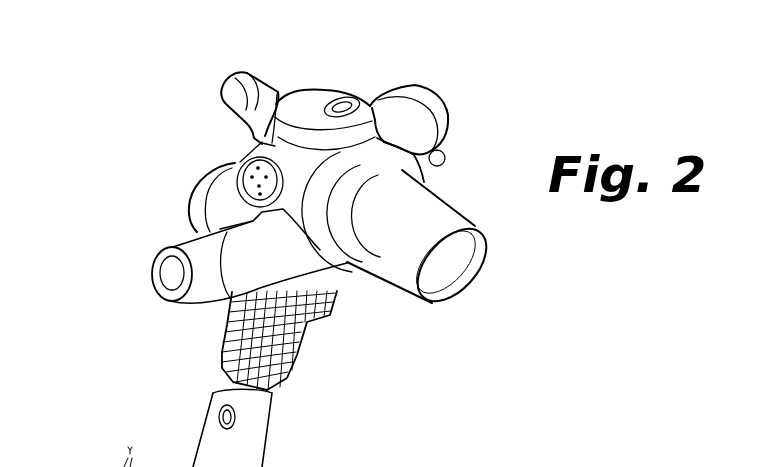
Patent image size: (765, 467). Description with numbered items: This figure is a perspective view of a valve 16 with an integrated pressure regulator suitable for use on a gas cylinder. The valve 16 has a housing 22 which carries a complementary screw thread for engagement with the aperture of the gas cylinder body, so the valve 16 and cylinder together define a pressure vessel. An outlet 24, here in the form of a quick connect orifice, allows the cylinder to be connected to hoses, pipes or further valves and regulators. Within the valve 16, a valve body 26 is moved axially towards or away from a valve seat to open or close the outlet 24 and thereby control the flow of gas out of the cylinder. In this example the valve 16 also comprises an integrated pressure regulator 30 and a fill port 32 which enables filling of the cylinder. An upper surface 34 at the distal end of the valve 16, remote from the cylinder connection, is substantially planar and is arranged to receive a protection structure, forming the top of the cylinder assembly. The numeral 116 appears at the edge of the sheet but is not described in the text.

The valve 16 is at (150, 81).
The housing 22 is at (216, 360).
The outlet 24 is at (446, 153).
The valve body 26 is at (215, 210).
The integrated pressure regulator 30 is at (466, 273).
The fill port 32 is at (243, 78).
The upper surface 34 is at (340, 100).
The mounting bracket 116 is at (528, 460).